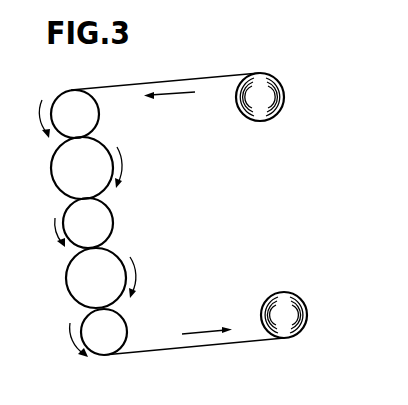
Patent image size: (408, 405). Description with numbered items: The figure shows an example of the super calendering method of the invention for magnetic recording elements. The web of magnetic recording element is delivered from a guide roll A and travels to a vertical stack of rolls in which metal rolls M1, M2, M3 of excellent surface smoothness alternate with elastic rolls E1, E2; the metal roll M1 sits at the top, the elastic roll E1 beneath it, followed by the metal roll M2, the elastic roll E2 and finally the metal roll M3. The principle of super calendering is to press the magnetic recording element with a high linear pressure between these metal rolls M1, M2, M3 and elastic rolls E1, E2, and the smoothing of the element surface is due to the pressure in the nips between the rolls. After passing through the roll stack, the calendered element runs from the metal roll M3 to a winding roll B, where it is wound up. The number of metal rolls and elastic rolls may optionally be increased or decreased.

The metal roll M1 is at (69, 114).
The elastic roll E1 is at (86, 168).
The metal roll M2 is at (84, 223).
The elastic roll E2 is at (101, 278).
The metal roll M3 is at (98, 333).
The guide roll A is at (278, 114).
The winding roll B is at (296, 295).